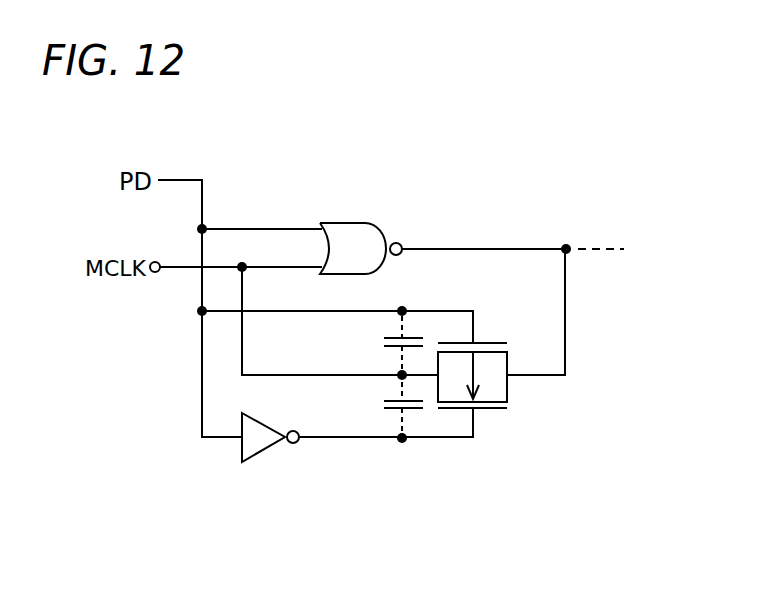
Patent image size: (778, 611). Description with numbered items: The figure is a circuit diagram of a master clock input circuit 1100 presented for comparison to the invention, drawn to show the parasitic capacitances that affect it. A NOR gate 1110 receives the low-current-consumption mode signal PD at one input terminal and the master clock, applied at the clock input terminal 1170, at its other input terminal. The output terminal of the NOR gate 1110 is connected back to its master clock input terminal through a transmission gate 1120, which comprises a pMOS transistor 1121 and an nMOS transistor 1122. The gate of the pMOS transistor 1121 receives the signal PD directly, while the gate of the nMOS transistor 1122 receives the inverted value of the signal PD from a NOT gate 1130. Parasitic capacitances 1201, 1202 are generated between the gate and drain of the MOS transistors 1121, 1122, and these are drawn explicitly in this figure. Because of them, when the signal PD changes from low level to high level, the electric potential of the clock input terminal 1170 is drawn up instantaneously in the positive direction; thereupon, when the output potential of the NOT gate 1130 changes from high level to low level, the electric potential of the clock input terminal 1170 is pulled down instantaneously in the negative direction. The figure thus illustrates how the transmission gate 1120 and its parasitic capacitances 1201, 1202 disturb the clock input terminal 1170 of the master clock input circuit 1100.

The master clock input circuit 1100 is at (618, 126).
The NOR gate 1110 is at (379, 225).
The transmission gate 1120 is at (547, 399).
The pMOS transistor 1121 is at (507, 362).
The nMOS transistor 1122 is at (507, 390).
The NOT gate 1130 is at (265, 453).
The clock input terminal 1170 is at (155, 273).
The parasitic capacitance 1201 is at (383, 342).
The parasitic capacitance 1202 is at (383, 404).